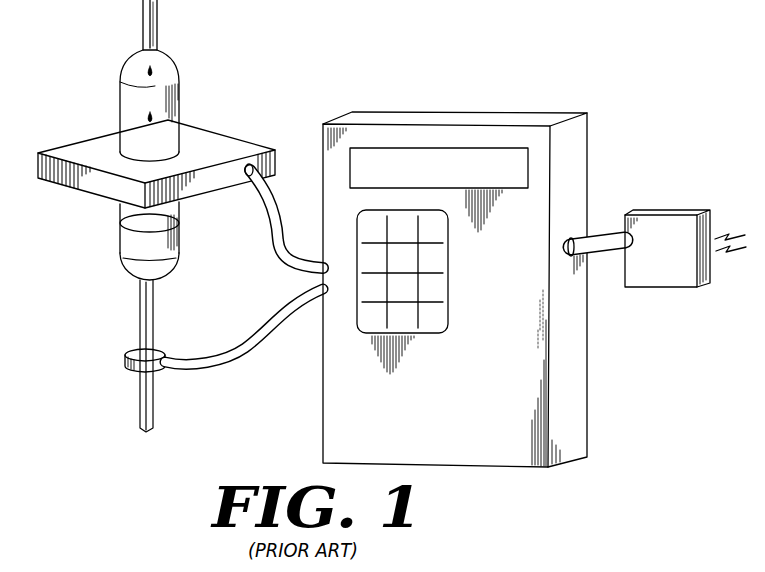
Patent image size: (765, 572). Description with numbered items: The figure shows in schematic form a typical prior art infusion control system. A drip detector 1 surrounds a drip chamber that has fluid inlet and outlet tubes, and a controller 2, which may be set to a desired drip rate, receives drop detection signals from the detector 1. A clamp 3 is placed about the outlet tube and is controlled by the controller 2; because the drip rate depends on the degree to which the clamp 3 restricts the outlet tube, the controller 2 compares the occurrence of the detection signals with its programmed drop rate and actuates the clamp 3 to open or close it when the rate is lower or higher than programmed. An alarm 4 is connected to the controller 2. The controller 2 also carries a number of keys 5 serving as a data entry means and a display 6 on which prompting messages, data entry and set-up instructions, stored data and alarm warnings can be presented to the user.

The drip detector 1 is at (195, 142).
The controller 2 is at (497, 305).
The clamp 3 is at (166, 352).
The alarm 4 is at (664, 213).
The keys 5 is at (433, 329).
The display 6 is at (443, 162).